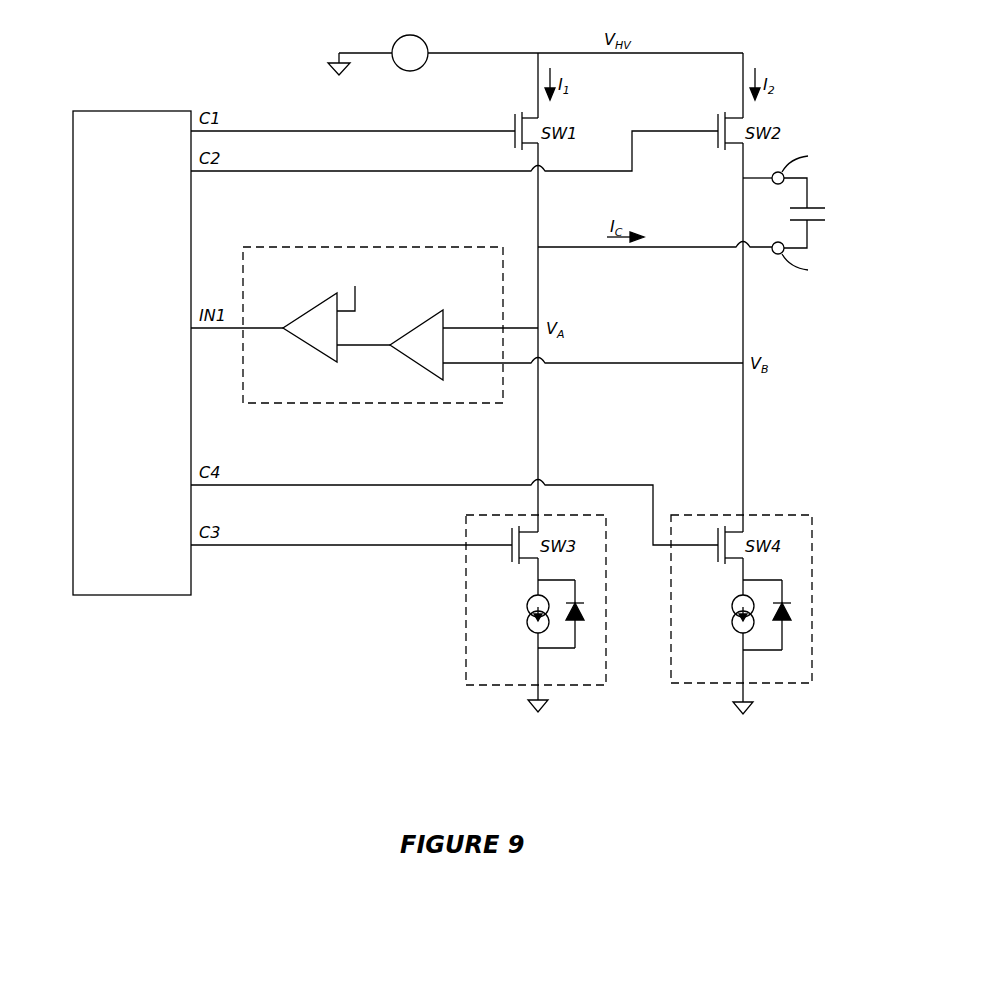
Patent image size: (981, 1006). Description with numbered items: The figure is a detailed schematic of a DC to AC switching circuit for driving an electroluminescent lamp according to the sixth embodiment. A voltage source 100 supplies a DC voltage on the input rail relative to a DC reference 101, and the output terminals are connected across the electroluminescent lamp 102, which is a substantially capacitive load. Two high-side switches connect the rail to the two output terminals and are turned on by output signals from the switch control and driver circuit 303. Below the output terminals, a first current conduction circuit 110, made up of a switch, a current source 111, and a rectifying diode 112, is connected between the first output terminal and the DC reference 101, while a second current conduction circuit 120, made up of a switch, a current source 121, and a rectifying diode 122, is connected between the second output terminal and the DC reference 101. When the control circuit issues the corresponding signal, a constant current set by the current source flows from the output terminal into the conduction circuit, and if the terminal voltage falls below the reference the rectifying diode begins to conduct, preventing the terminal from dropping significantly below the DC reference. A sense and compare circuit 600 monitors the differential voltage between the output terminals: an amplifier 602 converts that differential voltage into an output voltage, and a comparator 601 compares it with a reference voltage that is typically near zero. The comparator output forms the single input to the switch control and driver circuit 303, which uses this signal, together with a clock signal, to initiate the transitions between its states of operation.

The voltage source 100 is at (403, 36).
The switch control and driver circuit 303 is at (73, 163).
The sense and compare circuit 600 is at (373, 342).
The comparator 601 is at (302, 313).
The amplifier 602 is at (444, 316).
The electroluminescent lamp 102 is at (826, 206).
The first current conduction circuit 110 is at (517, 607).
The current source 111 is at (523, 613).
The rectifying diode 112 is at (585, 627).
The DC reference 101 is at (527, 703).
The second current conduction circuit 120 is at (766, 614).
The current source 121 is at (728, 614).
The rectifying diode 122 is at (788, 627).